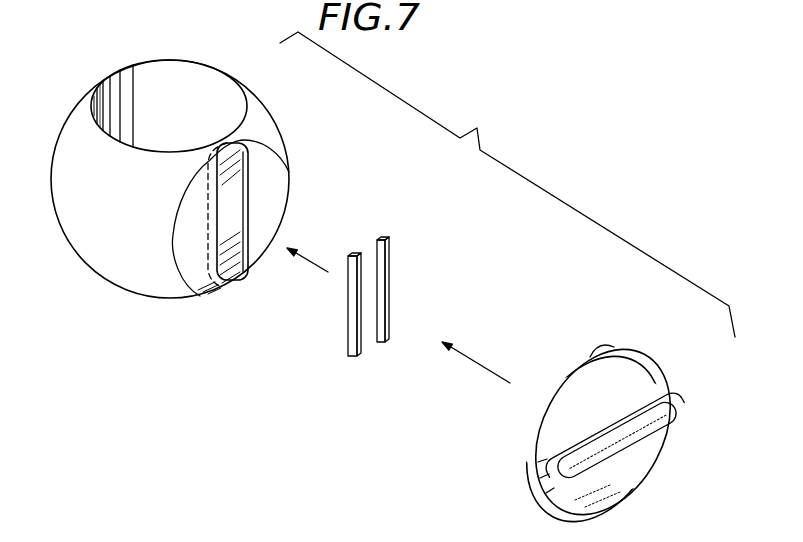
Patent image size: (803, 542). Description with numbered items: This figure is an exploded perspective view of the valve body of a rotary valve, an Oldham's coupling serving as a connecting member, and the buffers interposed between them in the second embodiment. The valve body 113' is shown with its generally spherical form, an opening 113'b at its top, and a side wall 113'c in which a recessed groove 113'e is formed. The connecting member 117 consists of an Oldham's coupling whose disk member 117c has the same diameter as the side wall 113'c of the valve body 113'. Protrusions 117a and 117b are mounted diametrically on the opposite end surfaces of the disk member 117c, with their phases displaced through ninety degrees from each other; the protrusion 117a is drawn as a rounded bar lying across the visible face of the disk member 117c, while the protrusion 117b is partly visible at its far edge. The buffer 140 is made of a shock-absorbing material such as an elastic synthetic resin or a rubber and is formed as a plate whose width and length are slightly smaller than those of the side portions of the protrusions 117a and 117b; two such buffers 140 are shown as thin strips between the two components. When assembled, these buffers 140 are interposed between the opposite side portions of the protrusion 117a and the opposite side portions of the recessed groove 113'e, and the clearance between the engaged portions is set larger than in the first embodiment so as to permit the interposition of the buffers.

The valve body 113' is at (178, 179).
The ball opening 113'b is at (169, 87).
The side wall 113'c is at (259, 218).
The recessed groove 113'e is at (245, 224).
The buffer 140 is at (355, 254).
The connecting member 117 is at (672, 358).
The protrusion 117a is at (668, 421).
The protrusion 117b is at (612, 340).
The disk member 117c is at (546, 427).